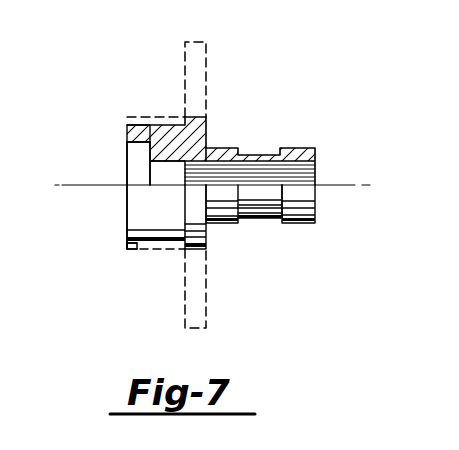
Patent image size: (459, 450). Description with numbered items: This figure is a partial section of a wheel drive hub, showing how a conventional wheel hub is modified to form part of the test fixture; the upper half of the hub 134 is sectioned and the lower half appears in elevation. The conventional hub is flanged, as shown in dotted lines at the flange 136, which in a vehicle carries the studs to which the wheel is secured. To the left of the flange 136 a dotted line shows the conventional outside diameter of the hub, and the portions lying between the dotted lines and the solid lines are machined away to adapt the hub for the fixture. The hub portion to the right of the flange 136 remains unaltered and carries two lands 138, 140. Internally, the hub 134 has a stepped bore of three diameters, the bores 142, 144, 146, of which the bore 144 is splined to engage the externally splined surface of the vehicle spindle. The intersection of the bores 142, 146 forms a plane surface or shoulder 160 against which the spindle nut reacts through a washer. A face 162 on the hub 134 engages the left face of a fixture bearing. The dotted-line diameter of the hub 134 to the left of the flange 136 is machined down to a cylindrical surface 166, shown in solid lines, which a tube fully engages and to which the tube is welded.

The hub 134 is at (128, 222).
The flange 136 is at (206, 307).
The land 138 is at (230, 224).
The land 140 is at (318, 226).
The bore 142 is at (133, 162).
The splined bore 144 is at (316, 165).
The bore 146 is at (167, 178).
The shoulder 160 is at (127, 143).
The face 162 is at (208, 132).
The cylindrical surface 166 is at (134, 247).